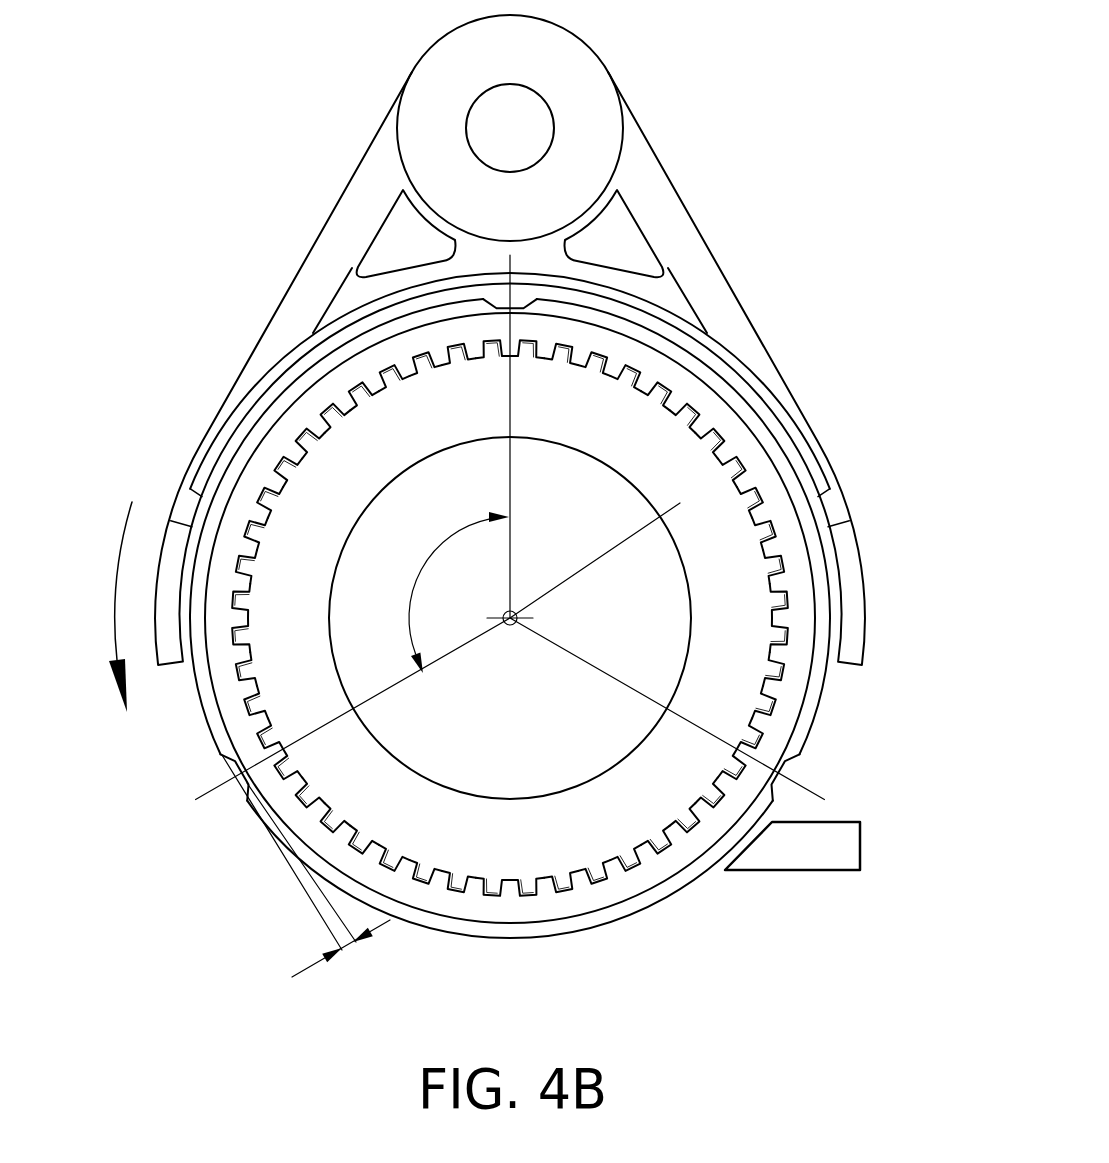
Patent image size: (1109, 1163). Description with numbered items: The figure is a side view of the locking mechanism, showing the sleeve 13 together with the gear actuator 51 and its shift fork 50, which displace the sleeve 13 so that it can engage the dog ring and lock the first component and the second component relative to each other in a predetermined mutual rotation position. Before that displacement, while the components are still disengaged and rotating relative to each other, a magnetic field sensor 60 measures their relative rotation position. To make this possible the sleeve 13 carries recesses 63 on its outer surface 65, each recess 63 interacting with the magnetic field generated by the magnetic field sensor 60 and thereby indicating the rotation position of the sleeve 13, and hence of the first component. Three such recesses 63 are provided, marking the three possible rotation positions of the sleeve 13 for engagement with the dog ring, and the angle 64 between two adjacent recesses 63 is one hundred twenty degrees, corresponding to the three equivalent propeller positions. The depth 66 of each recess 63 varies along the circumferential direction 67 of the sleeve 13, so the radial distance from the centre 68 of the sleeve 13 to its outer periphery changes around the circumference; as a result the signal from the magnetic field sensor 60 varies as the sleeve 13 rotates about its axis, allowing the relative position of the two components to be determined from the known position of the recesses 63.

The sleeve 13 is at (640, 892).
The shift fork 50 is at (362, 207).
The gear actuator 51 is at (660, 85).
The magnetic field sensor 60 is at (800, 845).
The recess 63 is at (497, 297).
The angle 64 is at (413, 570).
The outer surface 65 is at (600, 942).
The depth 66 is at (348, 955).
The circumferential direction 67 is at (117, 592).
The centre 68 is at (680, 503).